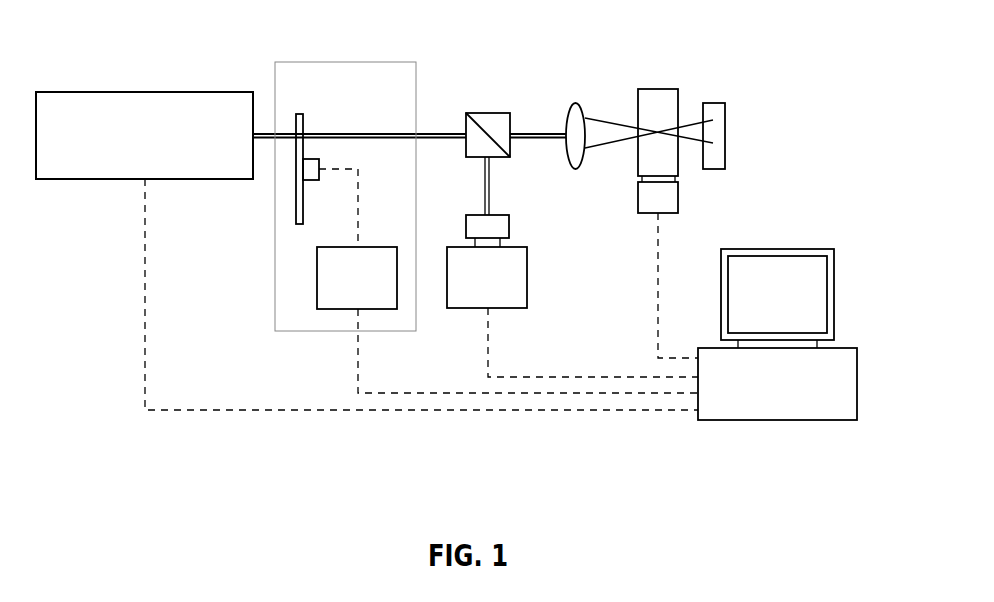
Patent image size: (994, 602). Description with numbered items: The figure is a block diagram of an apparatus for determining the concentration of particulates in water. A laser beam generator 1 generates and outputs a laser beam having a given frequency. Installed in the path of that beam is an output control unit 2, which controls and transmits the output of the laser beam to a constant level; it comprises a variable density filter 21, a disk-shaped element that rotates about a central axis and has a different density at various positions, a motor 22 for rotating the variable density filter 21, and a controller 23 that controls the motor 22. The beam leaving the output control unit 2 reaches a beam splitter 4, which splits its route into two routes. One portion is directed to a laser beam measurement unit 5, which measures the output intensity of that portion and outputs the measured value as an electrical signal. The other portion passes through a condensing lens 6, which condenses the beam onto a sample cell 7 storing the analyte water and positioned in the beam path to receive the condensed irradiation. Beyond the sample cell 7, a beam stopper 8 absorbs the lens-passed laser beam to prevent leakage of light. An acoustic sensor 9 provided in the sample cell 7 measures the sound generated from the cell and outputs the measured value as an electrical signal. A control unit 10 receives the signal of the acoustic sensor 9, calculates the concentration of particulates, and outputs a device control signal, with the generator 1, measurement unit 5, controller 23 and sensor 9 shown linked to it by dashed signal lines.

The laser beam generator 1 is at (144, 92).
The output control unit 2 is at (344, 62).
The variable density filter 21 is at (300, 113).
The motor 22 is at (311, 183).
The controller 23 is at (377, 247).
The beam splitter 4 is at (486, 113).
The laser beam measurement unit 5 is at (527, 276).
The condensing lens 6 is at (574, 101).
The sample cell 7 is at (656, 88).
The beam stopper 8 is at (715, 102).
The acoustic sensor 9 is at (678, 195).
The control unit 10 is at (857, 382).